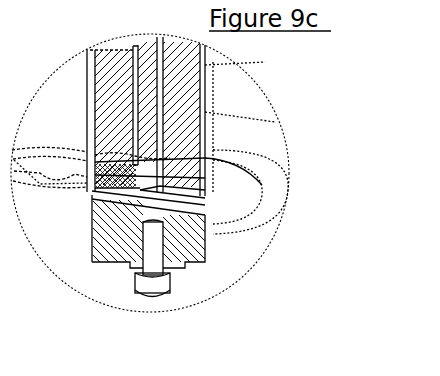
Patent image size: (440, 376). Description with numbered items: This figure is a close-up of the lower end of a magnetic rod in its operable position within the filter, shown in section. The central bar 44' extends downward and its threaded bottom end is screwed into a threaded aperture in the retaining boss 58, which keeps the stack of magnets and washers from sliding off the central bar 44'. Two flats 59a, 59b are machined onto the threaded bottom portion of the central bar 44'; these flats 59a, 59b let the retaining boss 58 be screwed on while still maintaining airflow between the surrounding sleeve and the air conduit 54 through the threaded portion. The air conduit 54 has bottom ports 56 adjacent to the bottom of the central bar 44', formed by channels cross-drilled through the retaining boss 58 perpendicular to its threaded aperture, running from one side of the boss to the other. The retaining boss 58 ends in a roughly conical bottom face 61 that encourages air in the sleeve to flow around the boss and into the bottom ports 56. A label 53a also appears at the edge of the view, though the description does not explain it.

The cup portion 53a is at (36, 2).
The central bar 44' is at (221, 117).
The air conduit 54 is at (160, 57).
The bottom ports 56 is at (127, 160).
The retaining boss 58 is at (140, 183).
The flat 59a is at (165, 187).
The flat 59b is at (168, 191).
The bottom face 61 is at (172, 195).